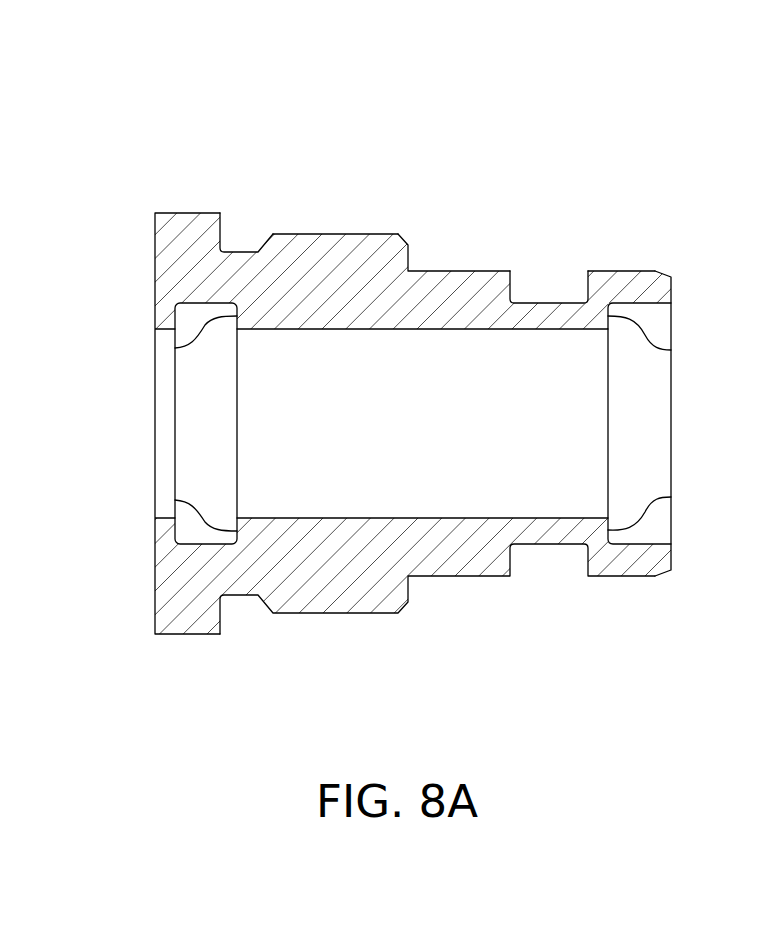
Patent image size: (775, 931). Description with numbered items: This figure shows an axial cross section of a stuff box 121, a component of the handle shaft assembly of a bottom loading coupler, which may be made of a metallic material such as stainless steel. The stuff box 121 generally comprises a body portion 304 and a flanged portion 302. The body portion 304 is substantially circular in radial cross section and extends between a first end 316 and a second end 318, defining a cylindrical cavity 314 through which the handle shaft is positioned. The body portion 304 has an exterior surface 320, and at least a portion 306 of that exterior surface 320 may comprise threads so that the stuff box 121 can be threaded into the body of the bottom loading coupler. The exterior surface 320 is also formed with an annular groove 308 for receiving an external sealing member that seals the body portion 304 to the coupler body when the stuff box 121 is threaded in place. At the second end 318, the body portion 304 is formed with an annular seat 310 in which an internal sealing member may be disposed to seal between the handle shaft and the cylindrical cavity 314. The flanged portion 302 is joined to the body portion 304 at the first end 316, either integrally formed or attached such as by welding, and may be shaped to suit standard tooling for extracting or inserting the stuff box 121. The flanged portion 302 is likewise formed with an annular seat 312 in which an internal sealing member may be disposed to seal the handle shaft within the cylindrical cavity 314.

The stuff box 121 is at (487, 132).
The flanged portion 302 is at (225, 188).
The body portion 304 is at (671, 658).
The portion of the exterior surface 306 is at (342, 233).
The annular groove 308 is at (550, 290).
The annular seat 310 is at (685, 497).
The annular seat 312 is at (175, 500).
The cylindrical cavity 314 is at (215, 417).
The first end 316 is at (228, 251).
The second end 318 is at (671, 281).
The exterior surface 320 is at (478, 243).